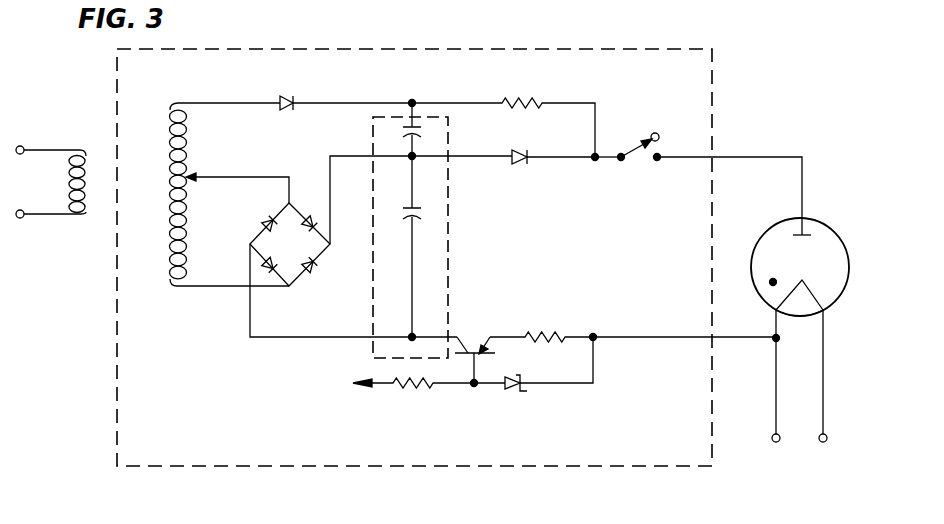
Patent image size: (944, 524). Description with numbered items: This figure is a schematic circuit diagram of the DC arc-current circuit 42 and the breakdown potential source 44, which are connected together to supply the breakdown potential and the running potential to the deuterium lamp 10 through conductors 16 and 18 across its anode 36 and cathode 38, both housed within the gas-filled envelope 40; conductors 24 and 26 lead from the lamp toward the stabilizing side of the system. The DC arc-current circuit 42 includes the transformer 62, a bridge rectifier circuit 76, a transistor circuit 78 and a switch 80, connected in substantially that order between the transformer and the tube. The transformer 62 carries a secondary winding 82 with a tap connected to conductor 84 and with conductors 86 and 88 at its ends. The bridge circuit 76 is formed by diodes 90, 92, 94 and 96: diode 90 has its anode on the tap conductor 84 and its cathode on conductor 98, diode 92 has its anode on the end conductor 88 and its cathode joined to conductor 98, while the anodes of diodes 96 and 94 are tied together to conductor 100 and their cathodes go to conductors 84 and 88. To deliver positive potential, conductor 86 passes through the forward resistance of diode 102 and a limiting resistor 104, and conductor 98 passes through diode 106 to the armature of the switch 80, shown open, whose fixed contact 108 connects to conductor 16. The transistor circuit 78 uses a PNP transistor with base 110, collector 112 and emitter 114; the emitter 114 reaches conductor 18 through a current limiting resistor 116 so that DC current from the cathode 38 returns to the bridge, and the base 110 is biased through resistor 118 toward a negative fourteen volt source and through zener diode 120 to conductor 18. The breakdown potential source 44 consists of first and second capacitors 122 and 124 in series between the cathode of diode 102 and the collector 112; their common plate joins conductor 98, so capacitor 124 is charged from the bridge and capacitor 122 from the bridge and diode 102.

The deuterium lamp 10 is at (818, 266).
The conductor 16 is at (766, 157).
The conductor 18 is at (680, 337).
The conductor 24 is at (776, 395).
The conductor 26 is at (823, 395).
The anode 36 is at (812, 234).
The cathode 38 is at (820, 306).
The envelope 40 is at (842, 294).
The DC arc-current circuit 42 is at (156, 378).
The breakdown potential source 44 is at (394, 192).
The transformer 62 is at (82, 140).
The bridge rectifier circuit 76 is at (273, 242).
The transistor circuit 78 is at (472, 400).
The switch 80 is at (628, 114).
The secondary winding 82 is at (170, 181).
The tap conductor 84 is at (258, 177).
The conductor 86 is at (246, 103).
The conductor 88 is at (224, 287).
The diode 90 is at (310, 214).
The diode 92 is at (312, 270).
The diode 94 is at (264, 276).
The diode 96 is at (262, 218).
The conductor 98 is at (348, 156).
The conductor 100 is at (318, 337).
The diode 102 is at (291, 97).
The limiting resistor 104 is at (530, 100).
The diode 106 is at (526, 160).
The fixed contact 108 is at (659, 153).
The base 110 is at (494, 343).
The collector 112 is at (456, 335).
The emitter 114 is at (492, 334).
The current limiting resistor 116 is at (556, 332).
The resistor 118 is at (408, 390).
The zener diode 120 is at (513, 392).
The first capacitor 122 is at (424, 130).
The second capacitor 124 is at (426, 216).